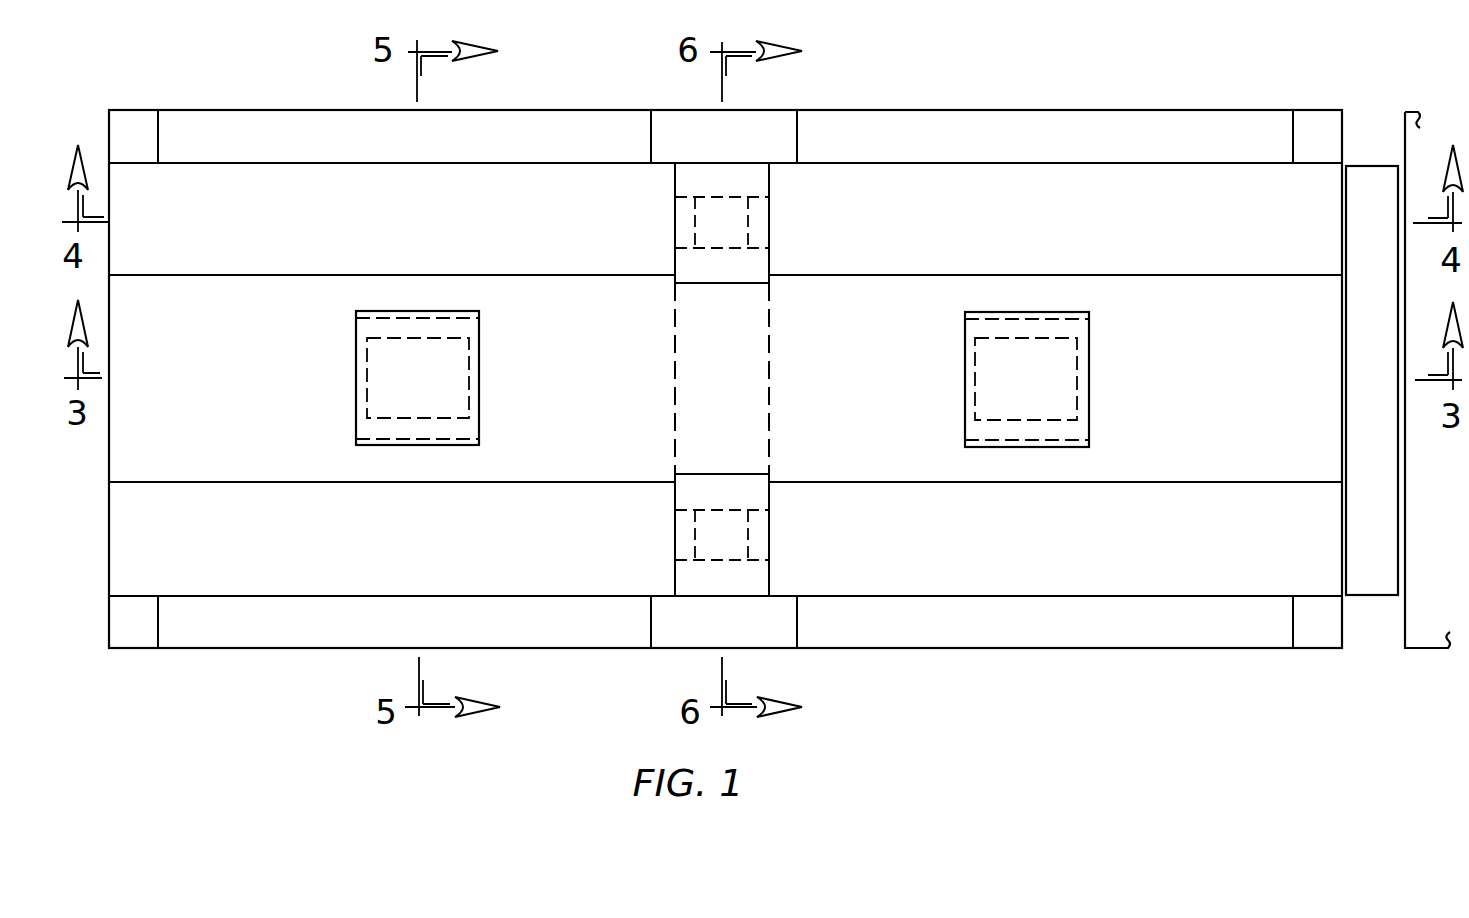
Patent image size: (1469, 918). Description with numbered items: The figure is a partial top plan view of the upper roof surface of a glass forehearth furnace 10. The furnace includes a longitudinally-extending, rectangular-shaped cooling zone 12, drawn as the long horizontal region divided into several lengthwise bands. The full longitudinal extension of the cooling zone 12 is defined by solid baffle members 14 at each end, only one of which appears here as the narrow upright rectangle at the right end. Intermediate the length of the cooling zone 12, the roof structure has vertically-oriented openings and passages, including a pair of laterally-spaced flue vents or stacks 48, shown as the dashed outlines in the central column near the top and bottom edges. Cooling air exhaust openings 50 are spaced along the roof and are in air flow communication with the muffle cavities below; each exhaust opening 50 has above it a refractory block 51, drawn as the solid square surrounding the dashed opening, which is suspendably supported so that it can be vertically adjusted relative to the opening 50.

The glass forehearth furnace 10 is at (278, 657).
The cooling zone 12 is at (1146, 567).
The solid baffle member 14 is at (1366, 165).
The flue vents or stacks 48 is at (722, 226).
The cooling air exhaust openings 50 is at (436, 371).
The refractory block 51 is at (480, 325).